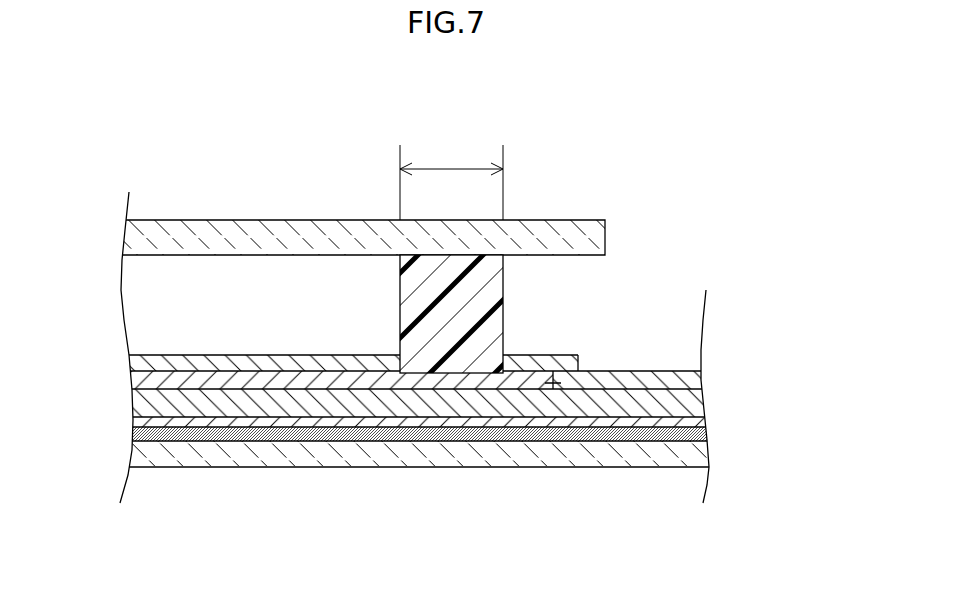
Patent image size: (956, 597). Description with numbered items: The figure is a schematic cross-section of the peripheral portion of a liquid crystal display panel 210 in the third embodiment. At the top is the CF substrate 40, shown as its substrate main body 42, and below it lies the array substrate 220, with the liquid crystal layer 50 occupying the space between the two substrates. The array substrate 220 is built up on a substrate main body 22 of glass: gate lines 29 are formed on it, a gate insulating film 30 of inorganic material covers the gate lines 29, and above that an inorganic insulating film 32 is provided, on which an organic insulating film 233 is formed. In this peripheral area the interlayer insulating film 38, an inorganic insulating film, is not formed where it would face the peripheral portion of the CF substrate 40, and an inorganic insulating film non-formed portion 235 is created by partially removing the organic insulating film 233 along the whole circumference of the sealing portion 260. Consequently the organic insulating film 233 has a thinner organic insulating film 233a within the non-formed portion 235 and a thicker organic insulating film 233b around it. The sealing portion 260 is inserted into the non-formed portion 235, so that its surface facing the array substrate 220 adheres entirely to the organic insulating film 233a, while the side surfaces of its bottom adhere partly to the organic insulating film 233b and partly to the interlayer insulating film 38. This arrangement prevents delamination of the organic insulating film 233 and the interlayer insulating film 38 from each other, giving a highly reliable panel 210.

The liquid crystal display panel 210 is at (731, 156).
The inorganic insulating film non-formed portion 235 is at (440, 168).
The CF substrate 40 is at (590, 233).
The substrate main body 42 is at (421, 237).
The liquid crystal layer 50 is at (135, 308).
The sealing portion 260 is at (498, 317).
The interlayer insulating film 38 is at (562, 362).
The organic insulating film 233 is at (458, 407).
The organic insulating film 233a is at (453, 383).
The organic insulating film 233b is at (307, 383).
The inorganic insulating film 32 is at (695, 403).
The gate insulating film 30 is at (697, 423).
The gate lines 29 is at (698, 437).
The substrate main body 22 is at (687, 453).
The array substrate 220 is at (112, 355).